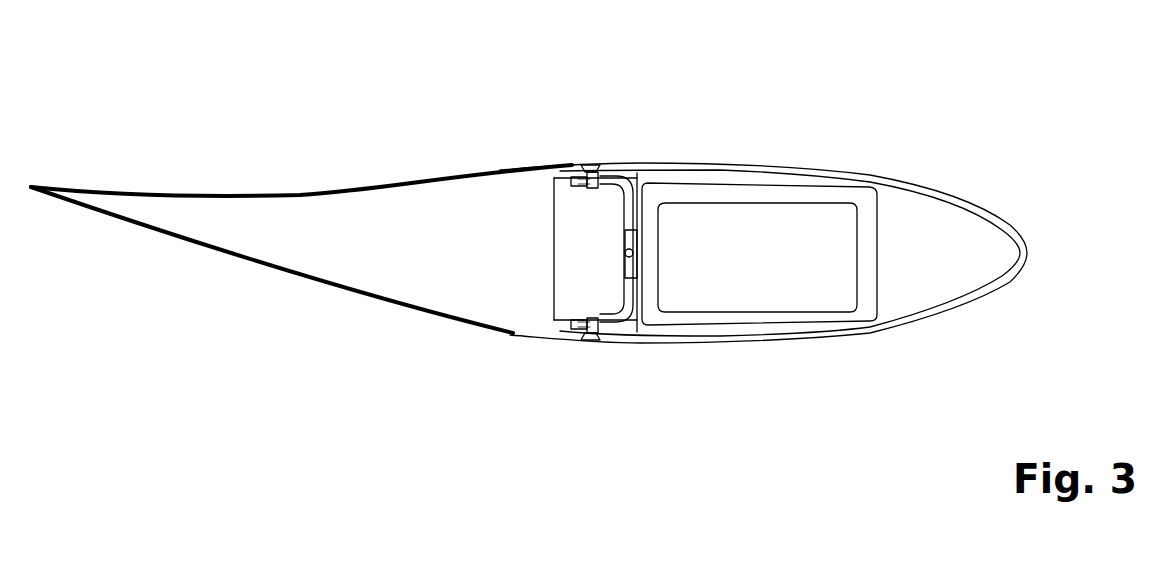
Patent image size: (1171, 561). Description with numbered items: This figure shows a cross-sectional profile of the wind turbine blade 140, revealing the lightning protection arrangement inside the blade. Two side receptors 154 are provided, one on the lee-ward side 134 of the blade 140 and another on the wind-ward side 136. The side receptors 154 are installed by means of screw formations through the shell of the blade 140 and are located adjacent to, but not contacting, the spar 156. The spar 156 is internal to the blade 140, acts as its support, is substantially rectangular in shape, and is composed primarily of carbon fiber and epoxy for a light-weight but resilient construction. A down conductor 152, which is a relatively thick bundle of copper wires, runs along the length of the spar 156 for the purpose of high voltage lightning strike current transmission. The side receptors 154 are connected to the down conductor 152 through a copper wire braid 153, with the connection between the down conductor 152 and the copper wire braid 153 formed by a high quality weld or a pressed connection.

The blade 140 is at (493, 111).
The lee-ward side 134 is at (768, 165).
The wind-ward side 136 is at (965, 315).
The down conductor 152 is at (623, 253).
The copper wire braid 153 is at (647, 340).
The side receptor 154 is at (588, 165).
The spar 156 is at (863, 288).